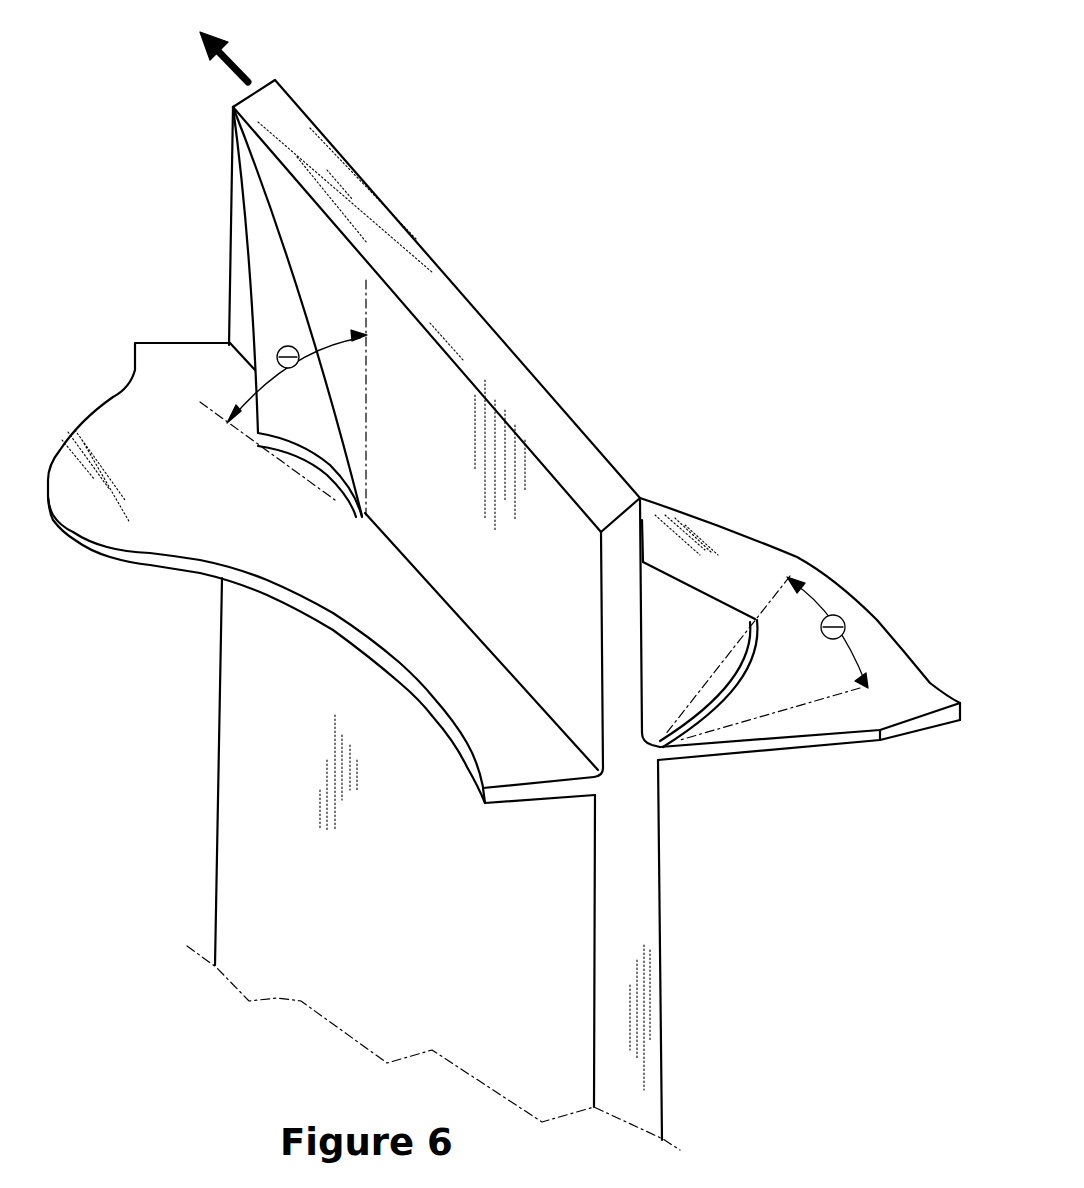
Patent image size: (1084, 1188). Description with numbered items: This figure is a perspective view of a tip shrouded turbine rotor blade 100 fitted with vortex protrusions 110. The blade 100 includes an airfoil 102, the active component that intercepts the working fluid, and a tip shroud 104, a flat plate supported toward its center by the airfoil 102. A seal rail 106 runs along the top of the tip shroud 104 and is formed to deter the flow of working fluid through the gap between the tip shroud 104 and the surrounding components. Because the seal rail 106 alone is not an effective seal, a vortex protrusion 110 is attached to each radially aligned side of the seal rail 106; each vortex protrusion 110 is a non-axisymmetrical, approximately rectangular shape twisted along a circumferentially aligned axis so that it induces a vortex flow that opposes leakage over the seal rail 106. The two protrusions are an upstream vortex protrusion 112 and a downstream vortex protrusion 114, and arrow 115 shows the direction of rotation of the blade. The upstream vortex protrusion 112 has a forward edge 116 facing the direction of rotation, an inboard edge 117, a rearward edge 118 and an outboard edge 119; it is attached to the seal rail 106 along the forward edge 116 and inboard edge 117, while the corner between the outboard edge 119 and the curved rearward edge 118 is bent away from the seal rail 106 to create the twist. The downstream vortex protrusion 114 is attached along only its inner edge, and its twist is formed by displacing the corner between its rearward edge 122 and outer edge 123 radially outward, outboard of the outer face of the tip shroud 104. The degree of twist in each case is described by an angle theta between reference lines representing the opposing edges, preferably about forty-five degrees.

The tip shrouded turbine rotor blade 100 is at (638, 253).
The airfoil 102 is at (388, 912).
The tip shroud 104 is at (177, 540).
The seal rail 106 is at (490, 340).
The vortex protrusion 110 is at (275, 420).
The upstream vortex protrusion 112 is at (283, 317).
The downstream vortex protrusion 114 is at (672, 603).
The arrow 115 is at (233, 61).
The forward edge 116 is at (230, 207).
The inboard edge 117 is at (243, 358).
The rearward edge 118 is at (310, 443).
The outboard edge 119 is at (255, 287).
The rearward edge 122 is at (753, 683).
The outer edge 123 is at (725, 603).